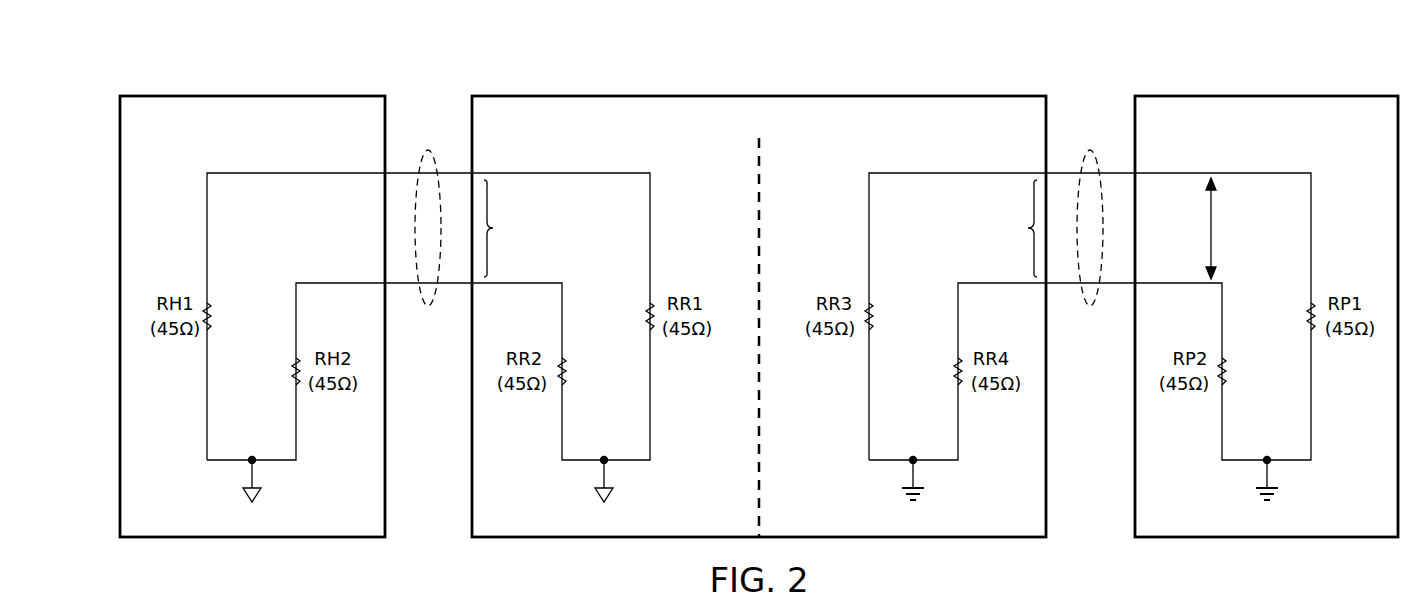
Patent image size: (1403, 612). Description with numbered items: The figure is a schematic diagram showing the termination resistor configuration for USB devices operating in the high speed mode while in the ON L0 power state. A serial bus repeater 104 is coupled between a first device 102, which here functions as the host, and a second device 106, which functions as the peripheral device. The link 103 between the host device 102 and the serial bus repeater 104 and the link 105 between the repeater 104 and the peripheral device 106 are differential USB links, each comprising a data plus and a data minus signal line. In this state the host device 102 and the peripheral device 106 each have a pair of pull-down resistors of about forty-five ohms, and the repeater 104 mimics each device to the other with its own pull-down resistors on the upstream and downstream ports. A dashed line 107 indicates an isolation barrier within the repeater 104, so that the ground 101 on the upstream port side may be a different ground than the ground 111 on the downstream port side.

The ground 101 is at (244, 498).
The first device 102 is at (228, 94).
The link 103 is at (428, 150).
The serial bus repeater 104 is at (840, 92).
The link 105 is at (1090, 150).
The second device 106 is at (1292, 92).
The dashed line 107 is at (760, 458).
The ground 111 is at (926, 493).